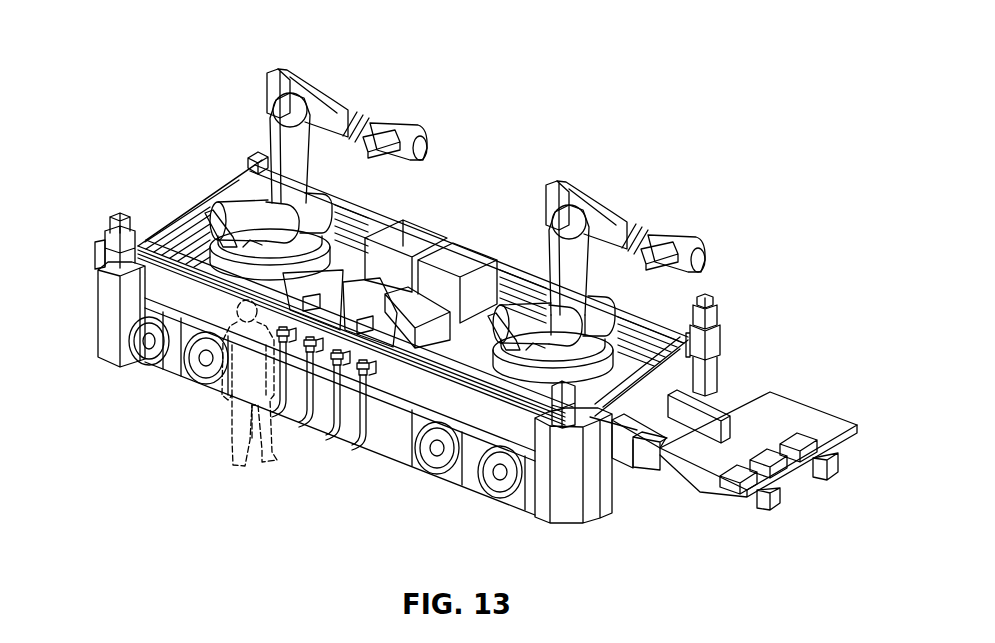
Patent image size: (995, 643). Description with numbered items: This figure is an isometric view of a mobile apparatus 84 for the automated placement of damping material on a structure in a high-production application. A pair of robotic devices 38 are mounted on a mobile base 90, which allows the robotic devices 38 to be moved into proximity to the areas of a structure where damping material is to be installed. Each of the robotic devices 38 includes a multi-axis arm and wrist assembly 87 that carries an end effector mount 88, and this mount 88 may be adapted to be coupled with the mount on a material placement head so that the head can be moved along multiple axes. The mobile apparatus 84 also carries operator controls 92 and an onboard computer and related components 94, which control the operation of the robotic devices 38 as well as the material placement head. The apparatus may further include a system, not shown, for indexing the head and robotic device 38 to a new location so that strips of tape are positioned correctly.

The robotic device 38 is at (248, 131).
The mobile apparatus 84 is at (717, 160).
The multi-axis arm and wrist assembly 87 is at (343, 112).
The end effector mount 88 is at (426, 146).
The mobile base 90 is at (480, 420).
The operator controls 92 is at (296, 414).
The onboard computer and related components 94 is at (467, 262).